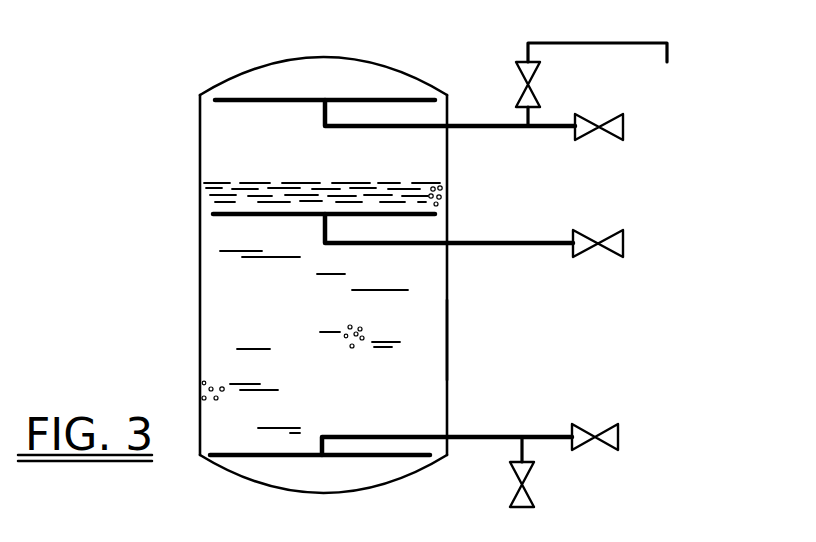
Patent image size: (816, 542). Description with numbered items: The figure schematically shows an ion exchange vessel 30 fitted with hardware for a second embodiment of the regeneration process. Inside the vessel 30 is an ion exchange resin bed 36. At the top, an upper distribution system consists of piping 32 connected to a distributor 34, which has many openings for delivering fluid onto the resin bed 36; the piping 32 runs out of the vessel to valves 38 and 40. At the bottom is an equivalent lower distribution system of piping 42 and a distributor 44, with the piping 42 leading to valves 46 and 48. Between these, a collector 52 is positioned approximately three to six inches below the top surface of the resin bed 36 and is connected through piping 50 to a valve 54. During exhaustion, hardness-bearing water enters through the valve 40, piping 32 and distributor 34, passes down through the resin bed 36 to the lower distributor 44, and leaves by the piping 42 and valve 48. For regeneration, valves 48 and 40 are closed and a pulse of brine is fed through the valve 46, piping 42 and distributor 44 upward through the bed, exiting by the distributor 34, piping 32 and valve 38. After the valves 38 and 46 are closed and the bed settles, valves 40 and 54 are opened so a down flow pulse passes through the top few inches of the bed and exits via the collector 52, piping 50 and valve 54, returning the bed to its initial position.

The ion exchange vessel 30 is at (200, 345).
The piping 32 is at (628, 43).
The distributor 34 is at (218, 104).
The resin bed 36 is at (448, 333).
The valve 38 is at (541, 68).
The valve 40 is at (625, 128).
The piping 42 is at (470, 437).
The distributor 44 is at (406, 457).
The valve 46 is at (535, 493).
The valve 48 is at (607, 432).
The piping 50 is at (490, 243).
The collector 52 is at (221, 215).
The valve 54 is at (625, 243).